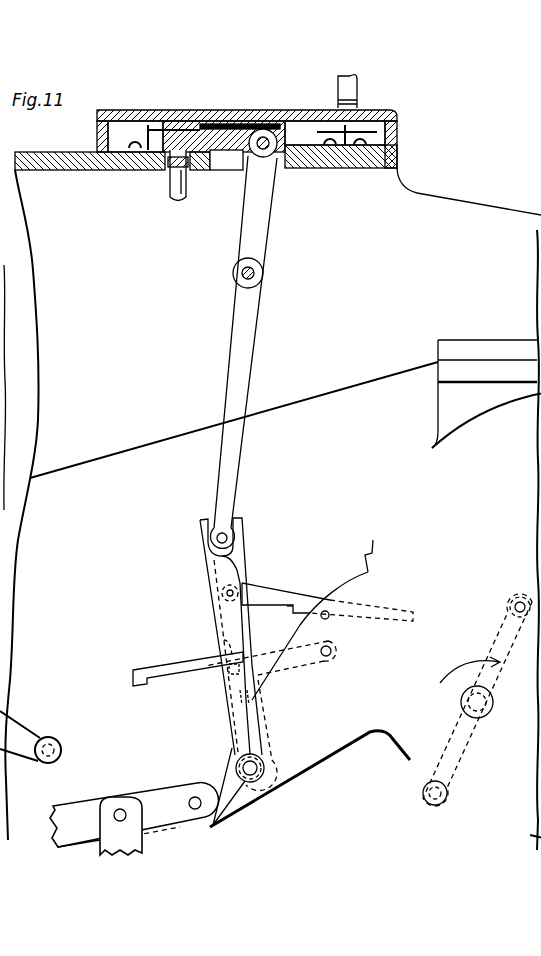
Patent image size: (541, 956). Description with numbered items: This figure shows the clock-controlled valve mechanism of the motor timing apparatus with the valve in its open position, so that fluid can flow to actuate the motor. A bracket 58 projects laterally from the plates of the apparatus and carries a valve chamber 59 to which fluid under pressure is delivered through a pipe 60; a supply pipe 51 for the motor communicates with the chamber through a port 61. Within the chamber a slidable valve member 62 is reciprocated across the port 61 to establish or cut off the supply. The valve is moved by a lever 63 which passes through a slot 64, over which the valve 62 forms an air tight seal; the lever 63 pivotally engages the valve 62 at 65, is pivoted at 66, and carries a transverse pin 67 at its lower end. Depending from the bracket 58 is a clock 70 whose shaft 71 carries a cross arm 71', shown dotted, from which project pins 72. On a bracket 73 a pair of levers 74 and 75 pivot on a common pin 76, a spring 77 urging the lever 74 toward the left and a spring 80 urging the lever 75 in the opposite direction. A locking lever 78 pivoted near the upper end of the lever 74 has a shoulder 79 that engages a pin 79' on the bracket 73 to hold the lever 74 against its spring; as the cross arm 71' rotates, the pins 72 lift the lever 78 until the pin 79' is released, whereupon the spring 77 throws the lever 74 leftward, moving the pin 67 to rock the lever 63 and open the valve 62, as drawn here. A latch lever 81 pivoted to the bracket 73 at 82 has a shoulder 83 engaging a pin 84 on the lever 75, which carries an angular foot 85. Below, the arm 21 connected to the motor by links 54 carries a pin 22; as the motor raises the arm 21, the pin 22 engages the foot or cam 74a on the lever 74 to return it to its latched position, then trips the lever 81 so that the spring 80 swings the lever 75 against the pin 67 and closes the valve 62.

The arm 21 is at (110, 800).
The transverse pin 22 is at (178, 790).
The supply pipe 51 is at (172, 190).
The links 54 is at (98, 824).
The bracket 58 is at (221, 505).
The valve chamber 59 is at (127, 132).
The pipe 60 is at (358, 93).
The port 61 is at (165, 158).
The slidable valve member 62 is at (227, 132).
The lever 63 is at (271, 222).
The slot 64 is at (233, 170).
The pivotal engagement 65 is at (276, 152).
The pivot 66 is at (262, 279).
The transverse pin 67 is at (233, 528).
The clock 70 is at (486, 540).
The shaft 71 is at (456, 702).
The cross arm 71' is at (477, 700).
The pins 72 is at (511, 605).
The bracket 73 is at (365, 750).
The lever 74 is at (245, 559).
The foot or cam 74a is at (230, 744).
The lever 75 is at (205, 563).
The common pin 76 is at (258, 778).
The spring 77 is at (240, 752).
The locking lever 78 is at (283, 593).
The shoulder 79 is at (277, 623).
The pin 79' is at (337, 626).
The spring 80 is at (256, 748).
The latch lever 81 is at (174, 674).
The pivot 82 is at (331, 656).
The shoulder 83 is at (236, 675).
The pin 84 is at (235, 660).
The angular foot 85 is at (213, 826).